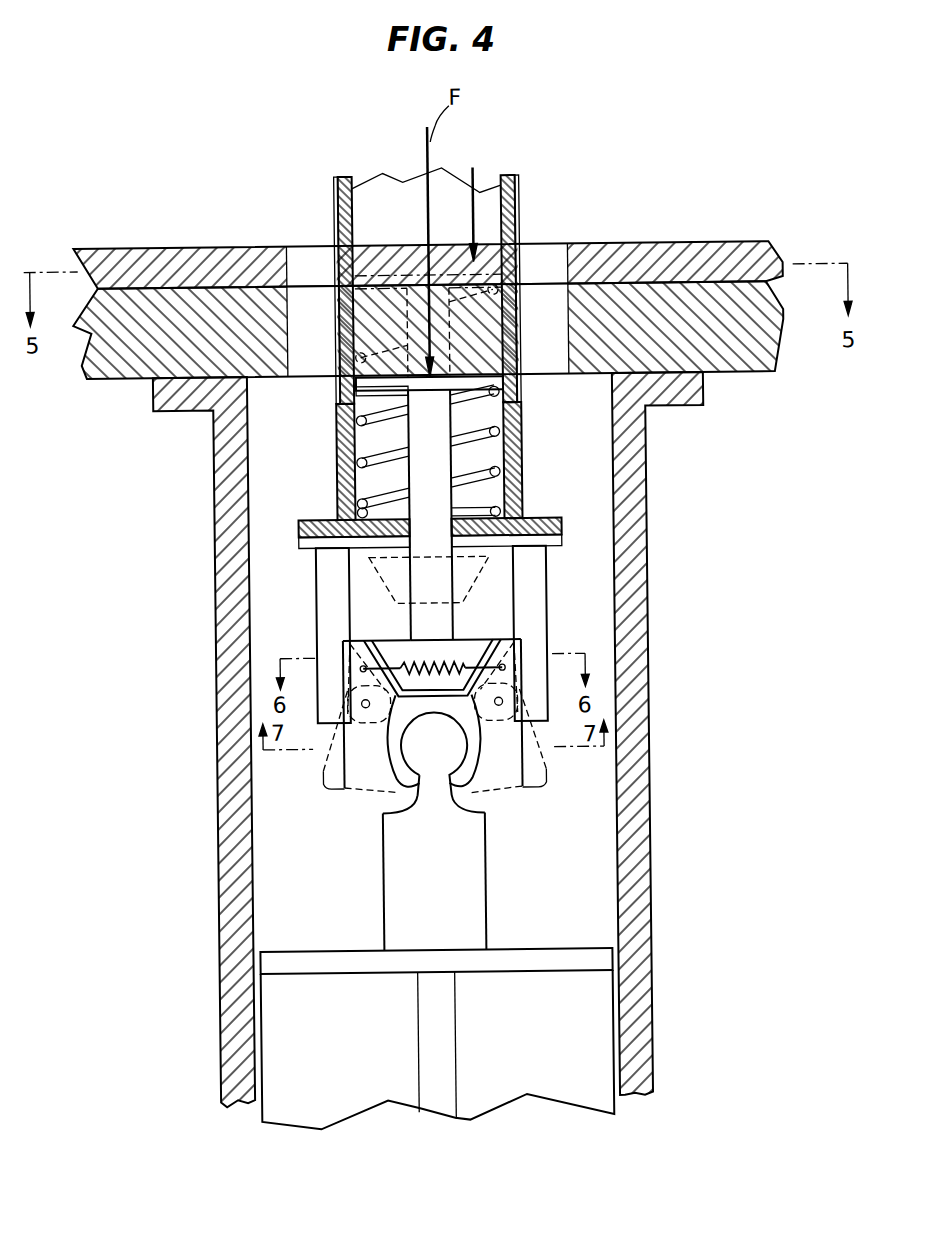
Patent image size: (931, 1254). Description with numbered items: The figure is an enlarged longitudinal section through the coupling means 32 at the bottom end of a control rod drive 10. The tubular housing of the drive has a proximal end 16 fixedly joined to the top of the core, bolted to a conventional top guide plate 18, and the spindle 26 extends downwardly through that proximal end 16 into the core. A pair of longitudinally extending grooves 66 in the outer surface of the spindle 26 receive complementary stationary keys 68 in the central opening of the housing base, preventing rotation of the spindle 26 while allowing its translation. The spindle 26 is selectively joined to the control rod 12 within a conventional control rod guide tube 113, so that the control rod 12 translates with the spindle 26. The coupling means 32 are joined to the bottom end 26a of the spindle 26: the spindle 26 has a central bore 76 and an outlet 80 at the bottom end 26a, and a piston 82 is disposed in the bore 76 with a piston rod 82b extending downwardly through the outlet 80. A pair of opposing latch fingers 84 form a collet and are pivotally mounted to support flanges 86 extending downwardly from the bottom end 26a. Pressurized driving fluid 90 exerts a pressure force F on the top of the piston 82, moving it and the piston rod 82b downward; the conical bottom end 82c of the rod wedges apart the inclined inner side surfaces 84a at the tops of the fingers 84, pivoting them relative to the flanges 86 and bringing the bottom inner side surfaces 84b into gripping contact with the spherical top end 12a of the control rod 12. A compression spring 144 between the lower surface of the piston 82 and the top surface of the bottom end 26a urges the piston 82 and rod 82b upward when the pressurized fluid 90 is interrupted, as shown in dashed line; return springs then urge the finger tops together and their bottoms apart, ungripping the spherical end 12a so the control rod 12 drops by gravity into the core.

The control rod drive 10 is at (446, 628).
The control rod 12 is at (497, 919).
The spherical end of control rod 12a is at (434, 752).
The proximal end of housing 16 is at (733, 246).
The top guide plate 18 is at (752, 376).
The spindle 26 is at (429, 312).
The bottom end of spindle 26a is at (339, 490).
The coupling means 32 is at (379, 695).
The grooves 66 is at (339, 196).
The stationary keys 68 is at (339, 268).
The central bore 76 is at (363, 182).
The outlet 80 is at (472, 517).
The piston 82 is at (425, 458).
The piston rod 82b is at (411, 621).
The conical bottom end of piston rod 82c is at (467, 641).
The latch fingers 84 is at (330, 790).
The inclined inner side surface of finger 84a is at (384, 646).
The bottom inner side surface of finger 84b is at (380, 788).
The support flanges 86 is at (317, 590).
The pressurized driving fluid 90 is at (484, 192).
The control rod guide tube 113 is at (650, 646).
The compression spring 144 is at (485, 442).